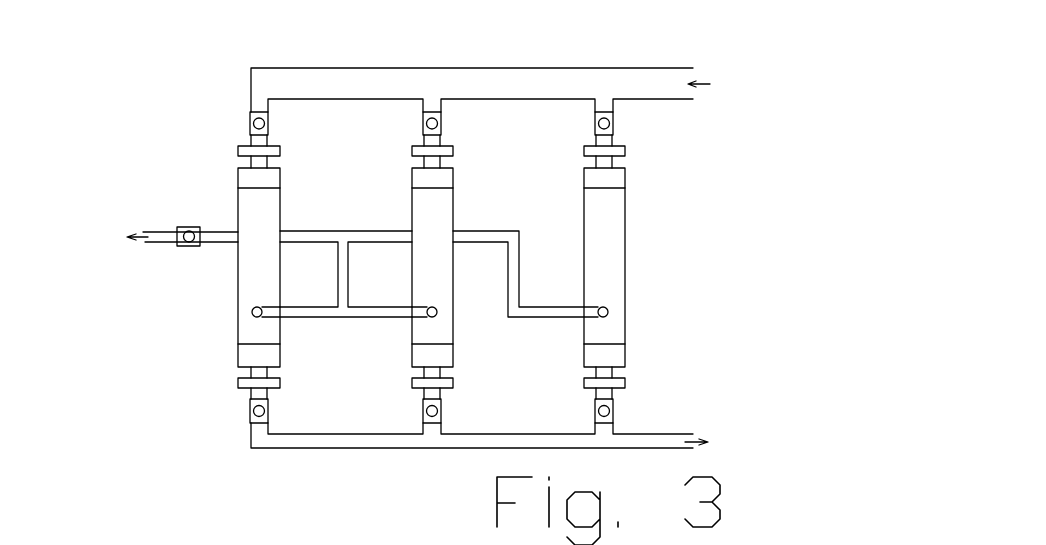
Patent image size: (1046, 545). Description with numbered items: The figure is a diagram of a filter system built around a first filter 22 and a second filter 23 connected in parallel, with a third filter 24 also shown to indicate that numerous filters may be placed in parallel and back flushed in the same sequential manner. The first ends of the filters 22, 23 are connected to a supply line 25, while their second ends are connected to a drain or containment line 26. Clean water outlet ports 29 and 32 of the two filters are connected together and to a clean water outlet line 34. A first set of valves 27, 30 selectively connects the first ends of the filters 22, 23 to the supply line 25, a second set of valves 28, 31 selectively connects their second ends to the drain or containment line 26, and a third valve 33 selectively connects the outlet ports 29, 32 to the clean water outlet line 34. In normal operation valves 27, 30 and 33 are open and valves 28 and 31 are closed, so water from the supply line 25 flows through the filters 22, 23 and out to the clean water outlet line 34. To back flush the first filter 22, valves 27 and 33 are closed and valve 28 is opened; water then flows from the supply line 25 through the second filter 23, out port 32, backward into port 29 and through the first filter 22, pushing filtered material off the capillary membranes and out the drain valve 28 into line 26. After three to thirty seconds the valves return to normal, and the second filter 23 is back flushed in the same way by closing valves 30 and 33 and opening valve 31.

The first filter 22 is at (258, 202).
The second filter 23 is at (430, 202).
The third filter 24 is at (606, 200).
The supply line 25 is at (351, 85).
The drain or containment line 26 is at (383, 437).
The first valve 27 is at (250, 124).
The drain valve 28 is at (250, 410).
The clean water outlet port 29 is at (254, 315).
The first-set valve 30 is at (423, 124).
The second-set valve 31 is at (423, 410).
The clean water outlet port 32 is at (428, 316).
The third valve 33 is at (189, 249).
The clean water outlet line 34 is at (143, 233).